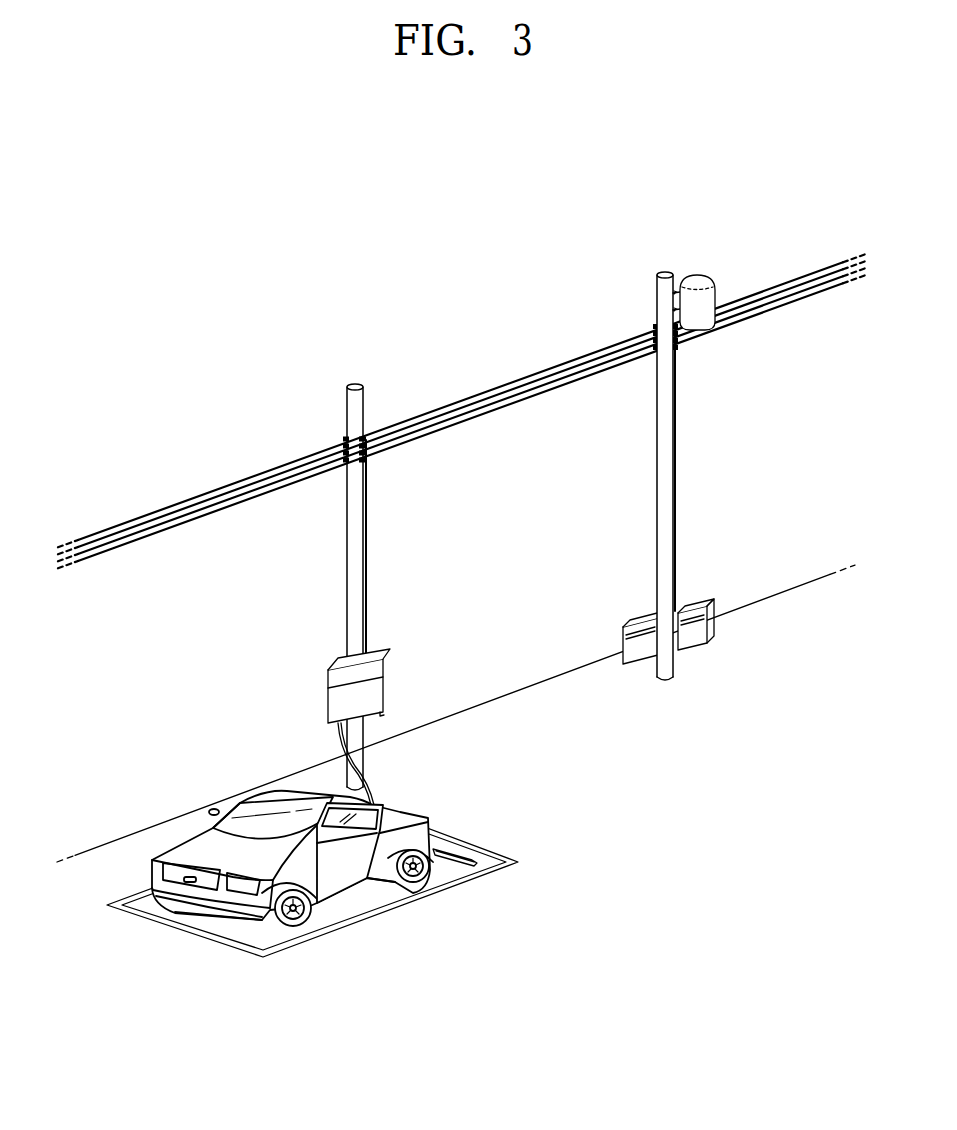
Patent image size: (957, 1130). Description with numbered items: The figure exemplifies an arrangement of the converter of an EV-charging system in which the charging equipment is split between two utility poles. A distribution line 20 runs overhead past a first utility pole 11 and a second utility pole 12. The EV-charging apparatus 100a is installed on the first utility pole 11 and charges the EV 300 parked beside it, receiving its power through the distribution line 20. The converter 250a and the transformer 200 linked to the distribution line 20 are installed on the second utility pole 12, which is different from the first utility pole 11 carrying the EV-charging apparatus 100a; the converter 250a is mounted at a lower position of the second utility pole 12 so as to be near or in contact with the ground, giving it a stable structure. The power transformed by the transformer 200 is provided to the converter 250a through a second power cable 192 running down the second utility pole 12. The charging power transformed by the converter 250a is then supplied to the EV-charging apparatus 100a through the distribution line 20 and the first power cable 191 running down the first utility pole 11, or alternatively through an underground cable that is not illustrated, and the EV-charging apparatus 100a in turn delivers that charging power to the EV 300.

The distribution line 20 is at (162, 509).
The first utility pole 11 is at (347, 522).
The second utility pole 12 is at (658, 407).
The first power cable 191 is at (362, 608).
The second power cable 192 is at (675, 492).
The EV-charging apparatus 100a is at (328, 706).
The converter 250a is at (697, 642).
The transformer 200 is at (697, 283).
The EV 300 is at (350, 878).